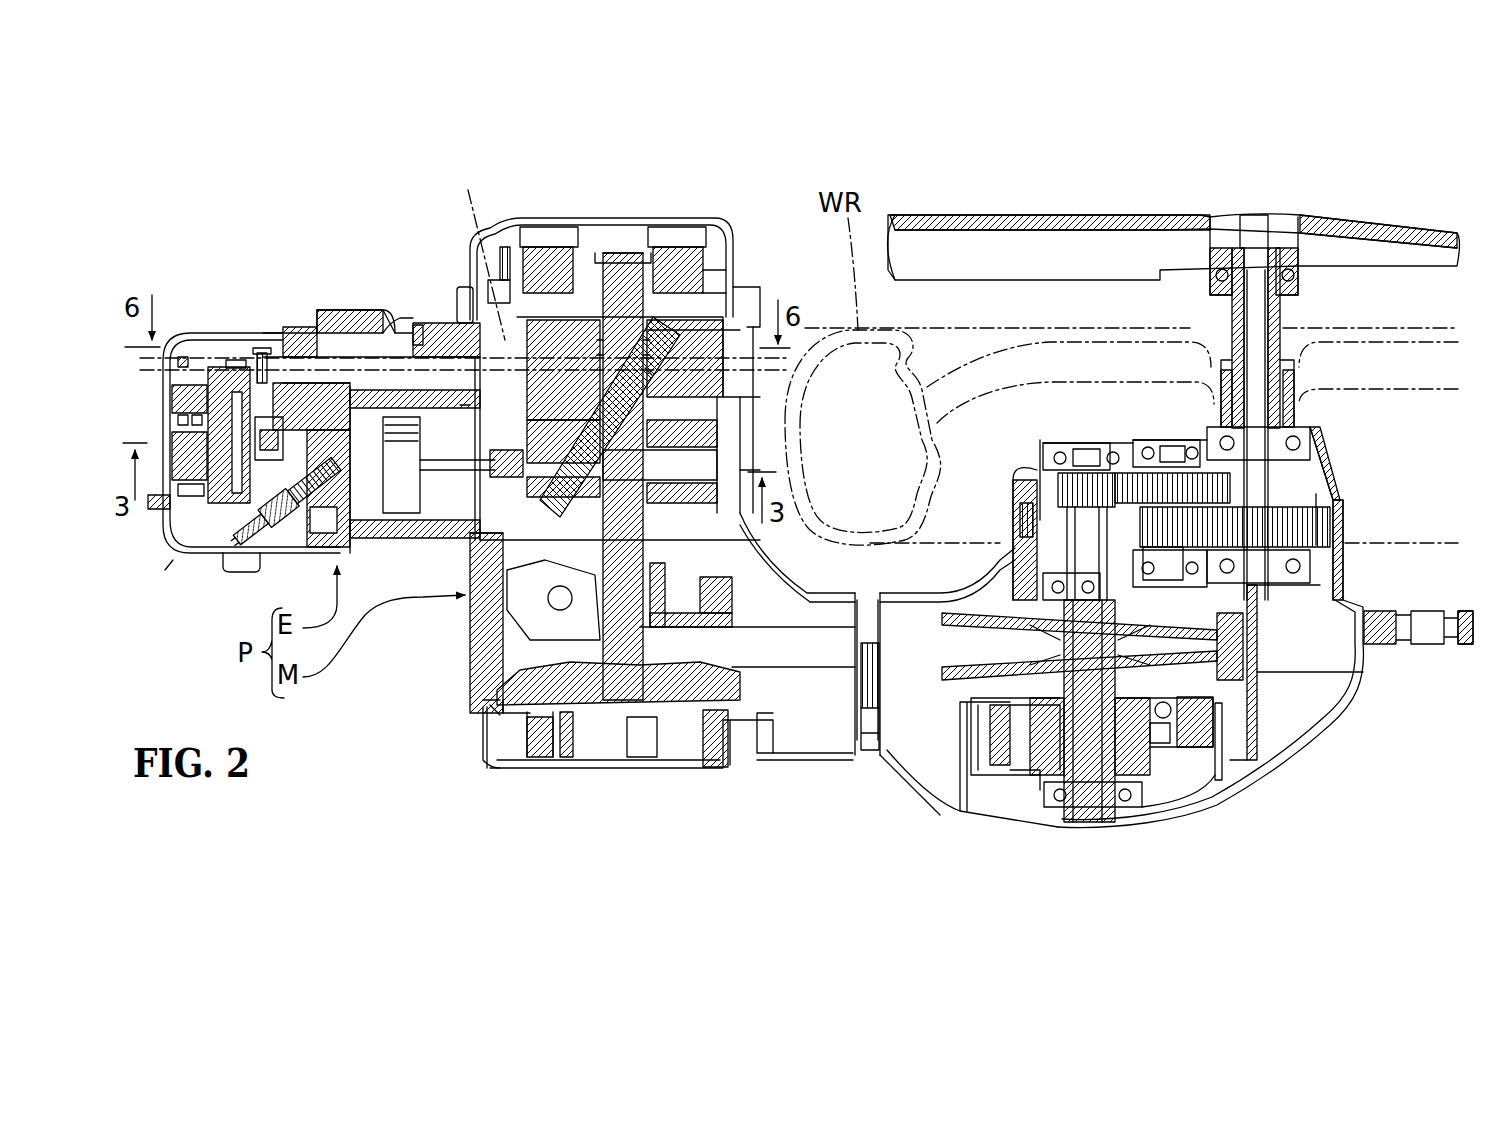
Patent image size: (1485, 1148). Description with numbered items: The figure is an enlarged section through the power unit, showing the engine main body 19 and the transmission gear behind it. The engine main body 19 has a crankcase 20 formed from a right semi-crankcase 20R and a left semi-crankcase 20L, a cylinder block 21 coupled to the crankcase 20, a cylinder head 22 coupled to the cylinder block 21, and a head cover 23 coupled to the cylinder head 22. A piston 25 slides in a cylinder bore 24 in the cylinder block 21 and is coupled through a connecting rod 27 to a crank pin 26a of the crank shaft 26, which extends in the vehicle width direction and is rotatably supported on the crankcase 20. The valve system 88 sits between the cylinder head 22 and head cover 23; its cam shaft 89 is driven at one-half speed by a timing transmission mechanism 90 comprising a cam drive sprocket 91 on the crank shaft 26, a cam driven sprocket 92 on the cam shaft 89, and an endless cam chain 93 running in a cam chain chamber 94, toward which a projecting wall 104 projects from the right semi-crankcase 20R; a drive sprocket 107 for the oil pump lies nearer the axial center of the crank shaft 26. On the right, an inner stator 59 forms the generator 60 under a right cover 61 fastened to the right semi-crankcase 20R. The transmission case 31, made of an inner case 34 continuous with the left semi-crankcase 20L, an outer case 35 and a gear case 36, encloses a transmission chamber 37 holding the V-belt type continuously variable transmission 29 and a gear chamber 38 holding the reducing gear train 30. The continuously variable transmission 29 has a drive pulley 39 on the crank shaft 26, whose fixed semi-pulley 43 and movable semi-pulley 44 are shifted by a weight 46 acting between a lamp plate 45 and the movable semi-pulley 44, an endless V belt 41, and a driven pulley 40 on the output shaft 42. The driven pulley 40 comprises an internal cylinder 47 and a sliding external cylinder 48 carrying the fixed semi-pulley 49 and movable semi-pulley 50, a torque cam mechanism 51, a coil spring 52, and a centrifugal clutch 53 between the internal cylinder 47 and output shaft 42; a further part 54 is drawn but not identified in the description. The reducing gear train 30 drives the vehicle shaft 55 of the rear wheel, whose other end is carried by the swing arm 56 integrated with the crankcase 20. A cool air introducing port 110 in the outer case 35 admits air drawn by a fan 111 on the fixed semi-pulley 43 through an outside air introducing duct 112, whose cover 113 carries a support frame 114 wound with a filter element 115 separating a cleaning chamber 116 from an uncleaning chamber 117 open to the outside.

The engine main body 19 is at (376, 305).
The crankcase 20 is at (845, 392).
The right semi-crankcase 20R is at (758, 405).
The left semi-crankcase 20L is at (755, 470).
The cylinder block 21 is at (392, 312).
The cylinder head 22 is at (268, 348).
The head cover 23 is at (181, 540).
The cylinder bore 24 is at (448, 320).
The piston 25 is at (405, 440).
The crank shaft 26 is at (655, 280).
The crank pin 26a is at (630, 466).
The connecting rod 27 is at (480, 487).
The V-belt type continuously variable transmission 29 is at (815, 618).
The reducing gear train 30 is at (1298, 500).
The transmission case 31 is at (915, 780).
The inner case 34 is at (918, 593).
The outer case 35 is at (958, 780).
The gear case 36 is at (1075, 440).
The transmission chamber 37 is at (804, 738).
The gear chamber 38 is at (1032, 465).
The drive pulley 39 is at (480, 740).
The driven pulley 40 is at (1232, 688).
The endless V belt 41 is at (765, 637).
The output shaft 42 is at (1060, 520).
The fixed semi-pulley 43 is at (480, 702).
The movable semi-pulley 44 is at (720, 578).
The lamp plate 45 is at (548, 596).
The weight 46 is at (470, 613).
The internal cylinder 47 is at (1230, 680).
The external cylinder 48 is at (1152, 755).
The fixed semi-pulley 49 is at (1240, 620).
The movable semi-pulley 50 is at (1245, 660).
The torque cam mechanism 51 is at (1000, 720).
The coil spring 52 is at (1040, 684).
The centrifugal clutch 53 is at (1197, 765).
The collar 54 is at (1042, 737).
The vehicle shaft 55 is at (1270, 352).
The swing arm 56 is at (1058, 215).
The inner stator 59 is at (555, 245).
The generator 60 is at (735, 283).
The right cover 61 is at (620, 215).
The valve system 88 is at (176, 378).
The cam shaft 89 is at (222, 362).
The timing transmission mechanism 90 is at (292, 340).
The cam drive sprocket 91 is at (700, 350).
The cam driven sprocket 92 is at (210, 372).
The endless cam chain 93 is at (471, 178).
The cam chain chamber 94 is at (347, 318).
The projecting wall 104 is at (470, 410).
The drive sprocket 107 is at (655, 375).
The cool air introducing port 110 is at (665, 752).
The fan 111 is at (535, 742).
The outside air introducing duct 112 is at (655, 777).
The cover 113 is at (700, 742).
The support frame 114 is at (583, 730).
The filter element 115 is at (562, 760).
The cleaning chamber 116 is at (637, 745).
The uncleaning chamber 117 is at (548, 755).